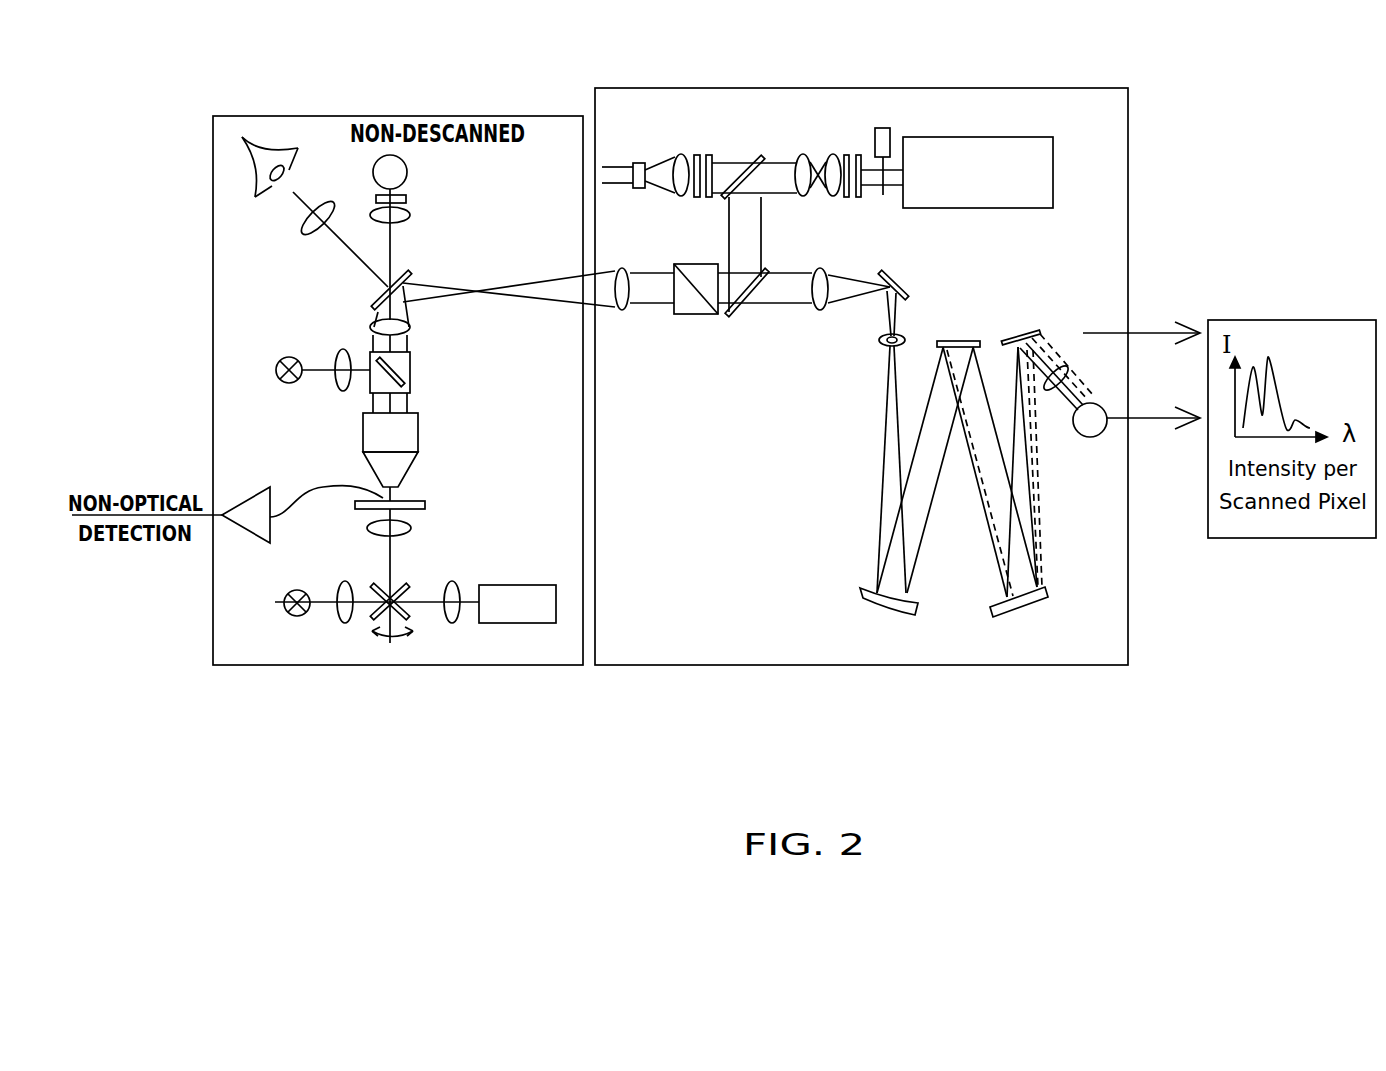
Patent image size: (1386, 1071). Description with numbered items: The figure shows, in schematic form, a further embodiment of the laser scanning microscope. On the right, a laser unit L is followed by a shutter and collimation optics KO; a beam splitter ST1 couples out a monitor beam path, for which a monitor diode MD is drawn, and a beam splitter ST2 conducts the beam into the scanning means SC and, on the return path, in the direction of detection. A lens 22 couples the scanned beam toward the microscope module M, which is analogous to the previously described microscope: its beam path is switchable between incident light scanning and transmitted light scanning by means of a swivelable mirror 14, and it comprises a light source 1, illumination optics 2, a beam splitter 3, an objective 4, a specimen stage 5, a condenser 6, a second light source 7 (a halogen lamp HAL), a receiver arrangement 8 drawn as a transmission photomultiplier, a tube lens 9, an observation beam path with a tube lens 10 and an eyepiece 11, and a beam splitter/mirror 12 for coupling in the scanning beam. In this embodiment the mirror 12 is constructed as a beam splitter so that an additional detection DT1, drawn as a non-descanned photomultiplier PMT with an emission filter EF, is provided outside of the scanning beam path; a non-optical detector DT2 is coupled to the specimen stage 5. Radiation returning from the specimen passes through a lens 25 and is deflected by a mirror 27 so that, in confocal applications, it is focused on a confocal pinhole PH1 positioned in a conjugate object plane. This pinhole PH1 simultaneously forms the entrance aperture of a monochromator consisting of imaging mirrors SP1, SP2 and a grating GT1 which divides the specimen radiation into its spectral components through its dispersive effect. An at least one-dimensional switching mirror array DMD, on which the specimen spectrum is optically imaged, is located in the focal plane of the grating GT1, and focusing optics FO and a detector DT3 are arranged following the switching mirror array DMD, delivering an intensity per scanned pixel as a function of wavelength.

The light source 1 is at (277, 358).
The illumination optics 2 is at (337, 353).
The beam splitter 3 is at (412, 372).
The objective 4 is at (418, 437).
The specimen stage 5 is at (420, 500).
The condenser 6 is at (412, 525).
The light source 7 is at (284, 603).
The receiver arrangement 8 is at (522, 585).
The tube lens 9 is at (412, 322).
The tube lens 10 is at (305, 239).
The eyepiece 11 is at (303, 232).
The beam splitter/mirror 12 is at (412, 271).
The swivelable mirror 14 is at (408, 615).
The scan lens 22 is at (622, 311).
The lens 25 is at (827, 270).
The deflecting mirror 27 is at (898, 275).
The microscope module M is at (508, 667).
The laser unit L is at (1053, 143).
The monitor diode MD is at (660, 153).
The beam splitter ST1 is at (737, 150).
The beam splitter ST2 is at (750, 300).
The collimation optics KO is at (820, 163).
The scanning means SC is at (697, 314).
The confocal pinhole PH1 is at (880, 342).
The grating GT1 is at (960, 340).
The switching mirror array DMD is at (1032, 321).
The focusing optics FO is at (1066, 372).
The additional detection DT1 is at (366, 171).
The non-optical detector DT2 is at (227, 502).
The detector DT3 is at (1090, 437).
The imaging mirror SP1 is at (858, 592).
The imaging mirror SP2 is at (1035, 603).
The photomultiplier PMT is at (436, 171).
The emission filter EF is at (410, 205).
The halogen lamp HAL is at (294, 645).